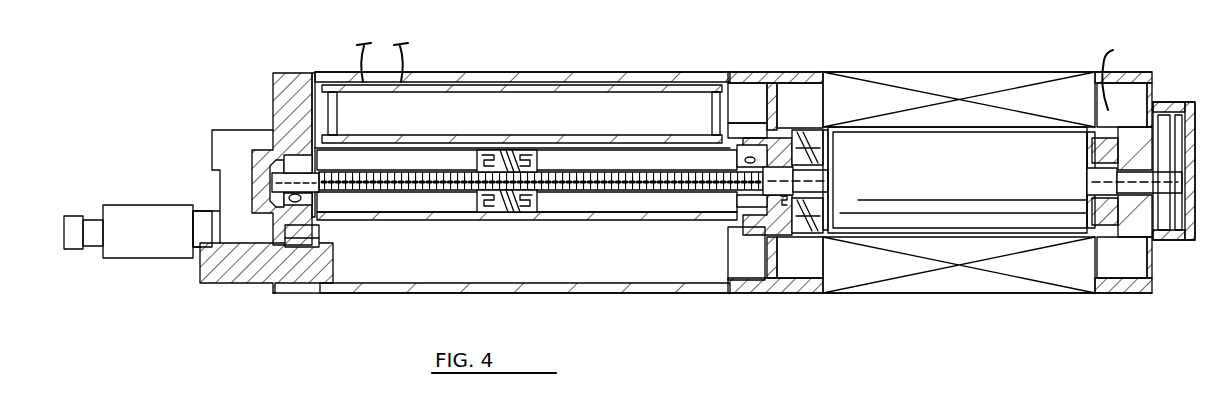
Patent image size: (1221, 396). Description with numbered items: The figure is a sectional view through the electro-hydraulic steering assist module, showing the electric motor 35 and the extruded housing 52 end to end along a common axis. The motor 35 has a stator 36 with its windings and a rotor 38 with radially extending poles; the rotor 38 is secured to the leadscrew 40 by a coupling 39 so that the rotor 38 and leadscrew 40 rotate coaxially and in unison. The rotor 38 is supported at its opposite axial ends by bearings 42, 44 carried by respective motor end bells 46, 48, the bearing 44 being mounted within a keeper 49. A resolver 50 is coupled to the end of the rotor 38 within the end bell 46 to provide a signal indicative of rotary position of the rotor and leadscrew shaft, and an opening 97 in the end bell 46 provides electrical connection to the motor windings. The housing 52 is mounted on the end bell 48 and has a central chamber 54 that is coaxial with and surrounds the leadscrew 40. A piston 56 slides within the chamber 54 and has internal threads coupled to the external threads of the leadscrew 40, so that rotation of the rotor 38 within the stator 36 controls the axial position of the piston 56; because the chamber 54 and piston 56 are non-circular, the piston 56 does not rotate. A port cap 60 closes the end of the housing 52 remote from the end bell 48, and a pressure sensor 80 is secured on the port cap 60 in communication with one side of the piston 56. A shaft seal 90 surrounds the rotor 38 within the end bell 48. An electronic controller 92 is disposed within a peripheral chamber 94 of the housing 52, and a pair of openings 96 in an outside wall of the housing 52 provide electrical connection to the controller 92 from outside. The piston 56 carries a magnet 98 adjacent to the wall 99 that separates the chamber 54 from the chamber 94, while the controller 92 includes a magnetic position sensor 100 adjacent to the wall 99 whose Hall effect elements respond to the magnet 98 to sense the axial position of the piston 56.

The electric motor 35 is at (1005, 66).
The stator 36 is at (947, 78).
The rotor 38 is at (952, 228).
The coupling 39 is at (785, 178).
The leadscrew 40 is at (667, 192).
The bearing 42 is at (1087, 168).
The bearing 44 is at (832, 152).
The motor end bell 46 is at (1143, 72).
The motor end bell 48 is at (768, 97).
The keeper 49 is at (827, 128).
The resolver 50 is at (1165, 223).
The housing 52 is at (572, 69).
The central chamber 54 is at (585, 212).
The piston 56 is at (540, 160).
The port cap 60 is at (283, 80).
The pressure sensor 80 is at (151, 209).
The shaft seal 90 is at (780, 202).
The electronic controller 92 is at (648, 85).
The peripheral chamber 94 is at (698, 85).
The openings 96 is at (372, 70).
The opening 97 is at (1115, 64).
The magnet 98 is at (506, 151).
The wall 99 is at (432, 140).
The magnetic position sensor 100 is at (600, 135).